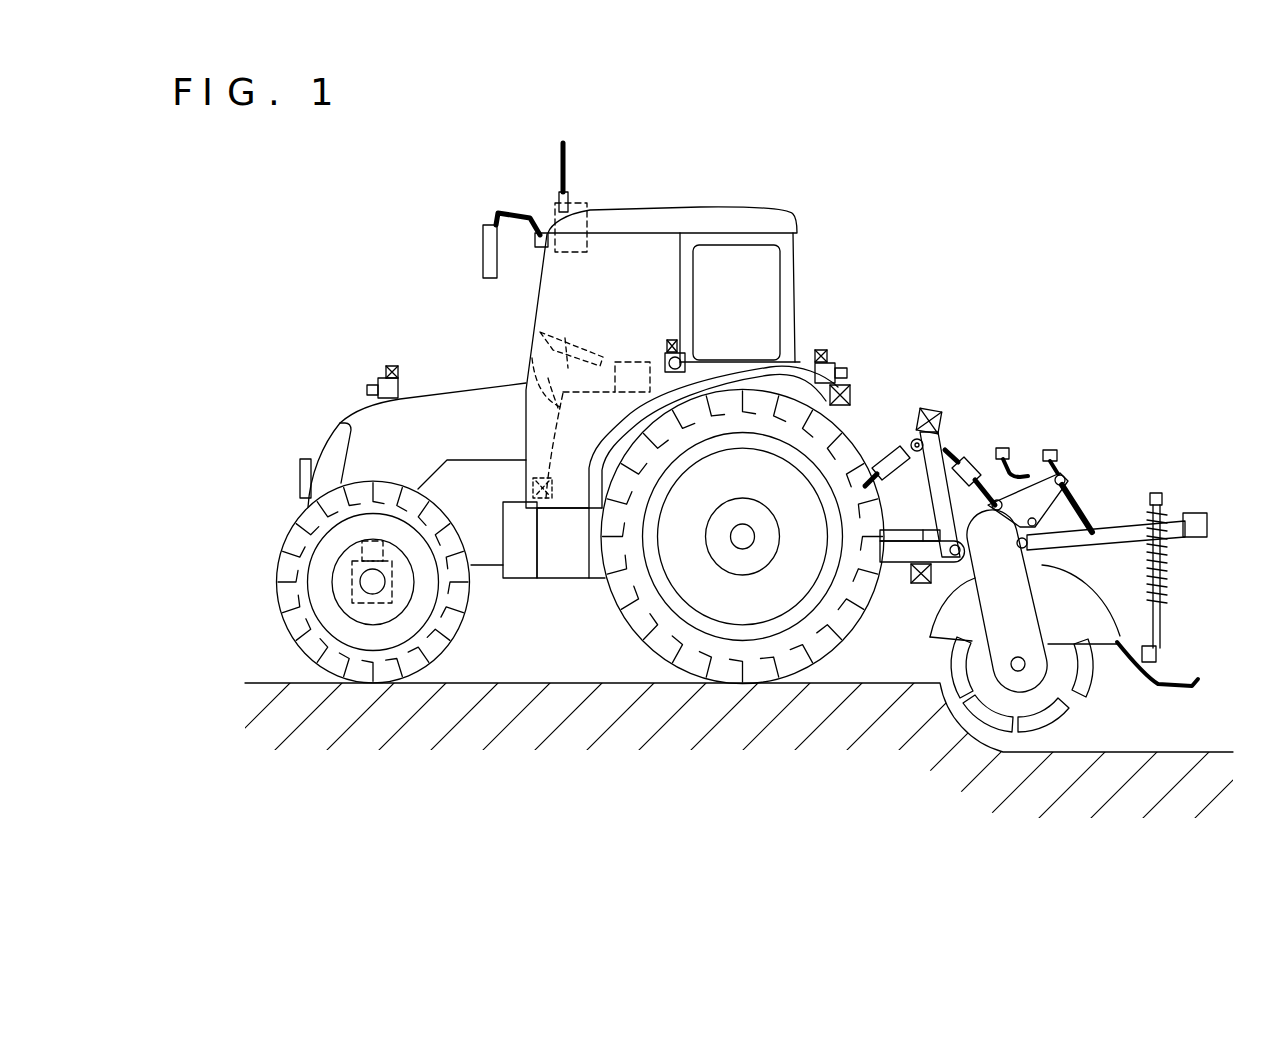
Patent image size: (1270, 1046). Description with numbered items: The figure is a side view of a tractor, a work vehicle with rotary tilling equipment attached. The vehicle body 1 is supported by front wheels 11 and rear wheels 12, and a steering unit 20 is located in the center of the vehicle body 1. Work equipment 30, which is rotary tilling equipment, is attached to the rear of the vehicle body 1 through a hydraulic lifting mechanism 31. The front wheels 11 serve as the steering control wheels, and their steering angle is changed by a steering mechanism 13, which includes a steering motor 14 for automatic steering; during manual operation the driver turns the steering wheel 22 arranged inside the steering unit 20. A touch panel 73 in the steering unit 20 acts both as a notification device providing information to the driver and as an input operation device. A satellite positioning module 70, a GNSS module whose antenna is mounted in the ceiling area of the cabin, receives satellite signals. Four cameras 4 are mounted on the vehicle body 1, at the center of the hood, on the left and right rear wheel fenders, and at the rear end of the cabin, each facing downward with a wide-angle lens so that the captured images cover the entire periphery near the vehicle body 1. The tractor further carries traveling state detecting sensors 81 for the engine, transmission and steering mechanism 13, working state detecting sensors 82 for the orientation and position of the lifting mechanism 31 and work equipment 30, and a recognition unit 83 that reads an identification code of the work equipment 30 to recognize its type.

The vehicle body 1 is at (525, 593).
The camera 4 is at (368, 391).
The front wheel 11 is at (365, 683).
The rear wheel 12 is at (757, 683).
The steering mechanism 13 is at (350, 584).
The steering motor 14 is at (352, 556).
The steering unit 20 is at (606, 343).
The steering wheel 22 is at (566, 343).
The work equipment 30 is at (1018, 728).
The lifting mechanism 31 is at (955, 432).
The satellite positioning module 70 is at (573, 204).
The touch panel 73 is at (644, 342).
The traveling state detecting sensor 81 is at (548, 510).
The working state detecting sensor 82 is at (852, 395).
The recognition unit 83 is at (918, 586).